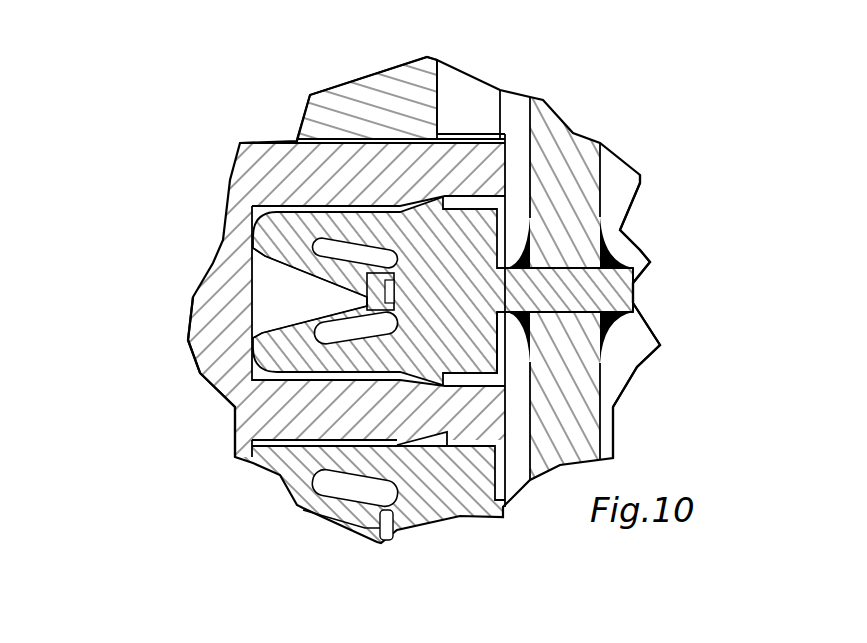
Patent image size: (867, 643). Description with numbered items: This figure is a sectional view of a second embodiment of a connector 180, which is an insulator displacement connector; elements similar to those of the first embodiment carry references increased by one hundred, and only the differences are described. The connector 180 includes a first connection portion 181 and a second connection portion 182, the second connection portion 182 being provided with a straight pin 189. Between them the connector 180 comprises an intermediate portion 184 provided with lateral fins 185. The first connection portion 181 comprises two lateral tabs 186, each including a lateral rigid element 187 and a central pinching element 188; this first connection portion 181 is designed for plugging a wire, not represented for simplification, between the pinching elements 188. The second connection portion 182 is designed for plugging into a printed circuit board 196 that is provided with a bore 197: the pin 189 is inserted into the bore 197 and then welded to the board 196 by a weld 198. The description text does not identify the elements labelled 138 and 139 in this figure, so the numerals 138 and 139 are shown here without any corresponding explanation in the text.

The lower housing piece 138 is at (268, 412).
The spring cavity 139 is at (262, 290).
The connector 180 is at (162, 380).
The first connection portion 181 is at (150, 268).
The second connection portion 182 is at (660, 283).
The intermediate portion 184 is at (474, 322).
The lateral fins 185 is at (427, 200).
The lateral tabs 186 is at (205, 176).
The lateral rigid element 187 is at (297, 135).
The central pinching element 188 is at (343, 268).
The straight pin 189 is at (633, 293).
The printed circuit board 196 is at (557, 150).
The bore 197 is at (574, 246).
The weld 198 is at (612, 265).